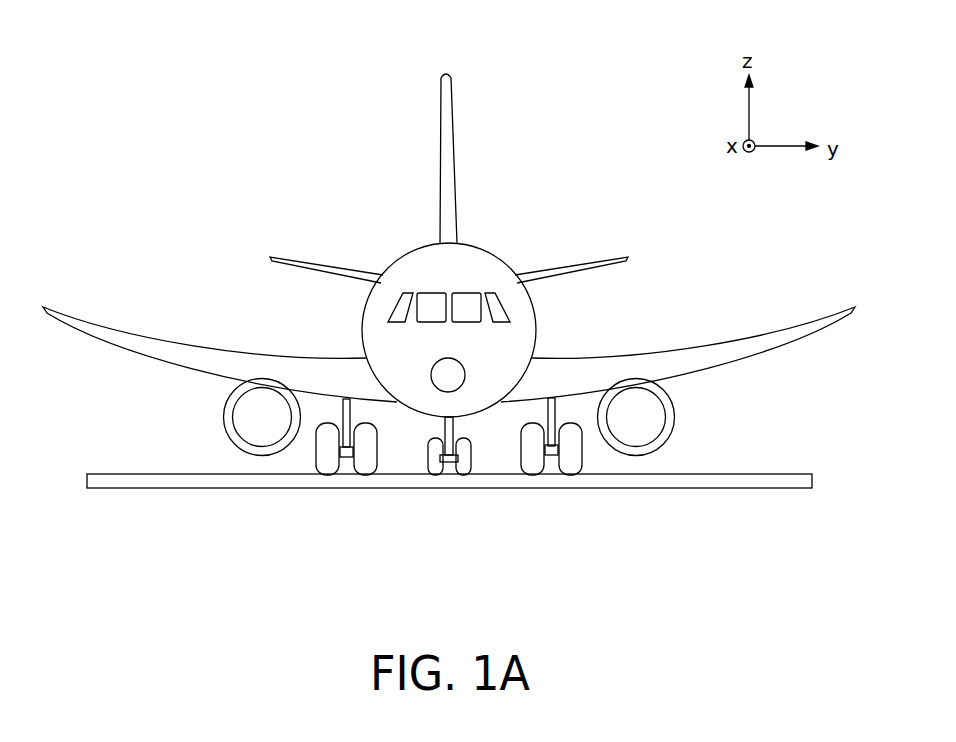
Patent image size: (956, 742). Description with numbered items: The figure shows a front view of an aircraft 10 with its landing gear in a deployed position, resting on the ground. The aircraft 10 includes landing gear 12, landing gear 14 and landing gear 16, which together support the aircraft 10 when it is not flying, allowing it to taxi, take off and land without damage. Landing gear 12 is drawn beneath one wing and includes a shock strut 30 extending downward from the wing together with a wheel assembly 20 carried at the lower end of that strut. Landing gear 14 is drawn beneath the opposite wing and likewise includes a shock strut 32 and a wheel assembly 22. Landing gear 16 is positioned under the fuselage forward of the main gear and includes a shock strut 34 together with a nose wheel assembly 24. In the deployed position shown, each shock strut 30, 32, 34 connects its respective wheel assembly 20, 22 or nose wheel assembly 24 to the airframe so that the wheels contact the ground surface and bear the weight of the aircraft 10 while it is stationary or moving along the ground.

The aircraft 10 is at (290, 153).
The landing gear 12 is at (602, 458).
The landing gear 14 is at (296, 456).
The landing gear 16 is at (482, 433).
The wheel assembly 20 is at (546, 460).
The wheel assembly 22 is at (341, 460).
The nose wheel assembly 24 is at (447, 463).
The shock strut 30 is at (537, 414).
The shock strut 32 is at (379, 463).
The shock strut 34 is at (440, 424).